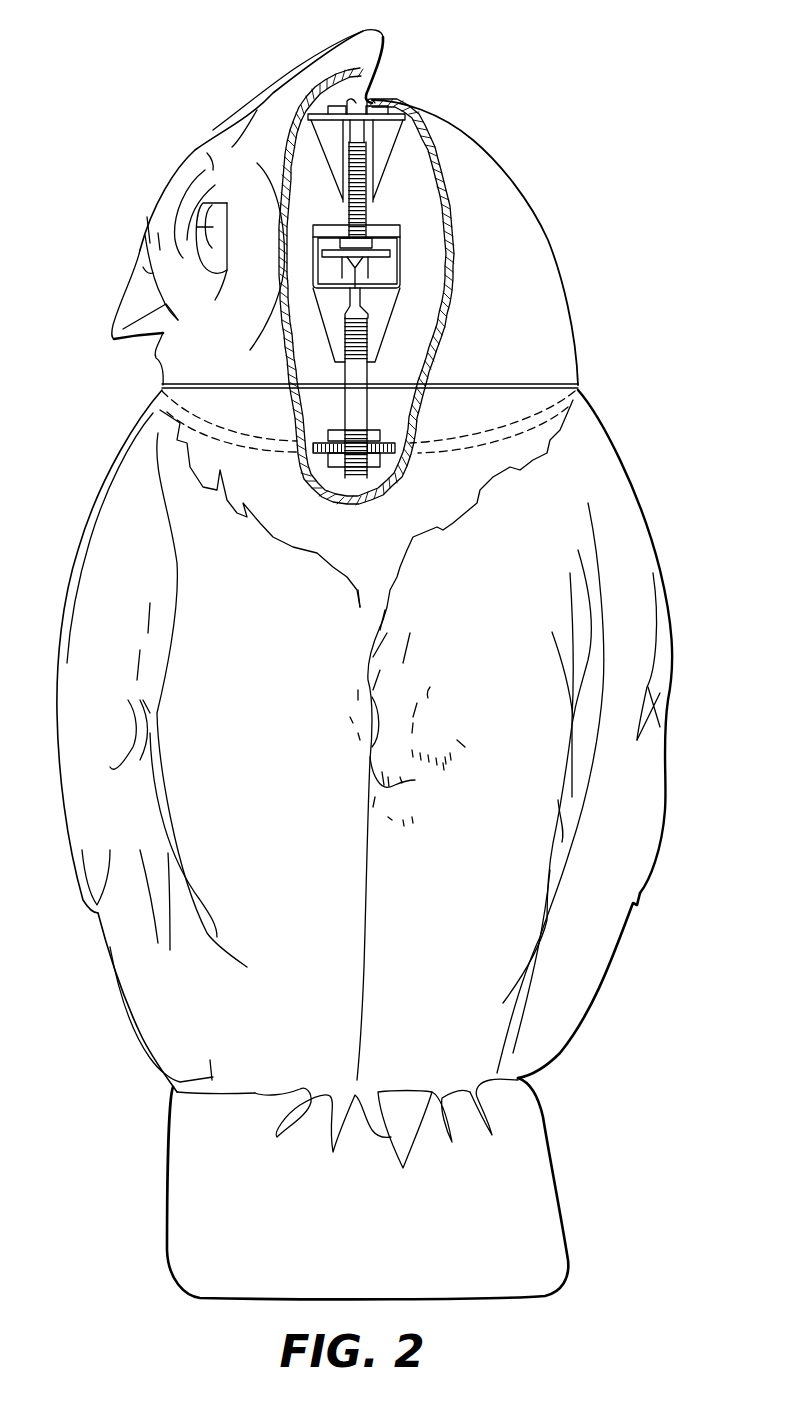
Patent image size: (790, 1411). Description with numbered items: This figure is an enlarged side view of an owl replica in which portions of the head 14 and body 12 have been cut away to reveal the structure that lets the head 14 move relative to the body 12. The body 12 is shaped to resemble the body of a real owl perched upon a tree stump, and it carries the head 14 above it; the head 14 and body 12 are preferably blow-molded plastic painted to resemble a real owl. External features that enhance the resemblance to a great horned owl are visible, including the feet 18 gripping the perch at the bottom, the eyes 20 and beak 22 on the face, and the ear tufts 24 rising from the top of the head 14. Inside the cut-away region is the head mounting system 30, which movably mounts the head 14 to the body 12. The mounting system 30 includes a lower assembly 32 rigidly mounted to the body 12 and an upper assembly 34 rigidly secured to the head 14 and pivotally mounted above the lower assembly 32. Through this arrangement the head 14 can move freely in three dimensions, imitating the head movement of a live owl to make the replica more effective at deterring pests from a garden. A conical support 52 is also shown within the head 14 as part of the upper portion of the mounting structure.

The body 12 is at (627, 457).
The head 14 is at (403, 100).
The feet 18 is at (402, 1170).
The eyes 20 is at (210, 227).
The beak 22 is at (123, 300).
The ear tufts 24 is at (384, 50).
The head mounting system 30 is at (412, 248).
The lower assembly 32 is at (372, 410).
The upper assembly 34 is at (370, 215).
The conical support 52 is at (323, 148).